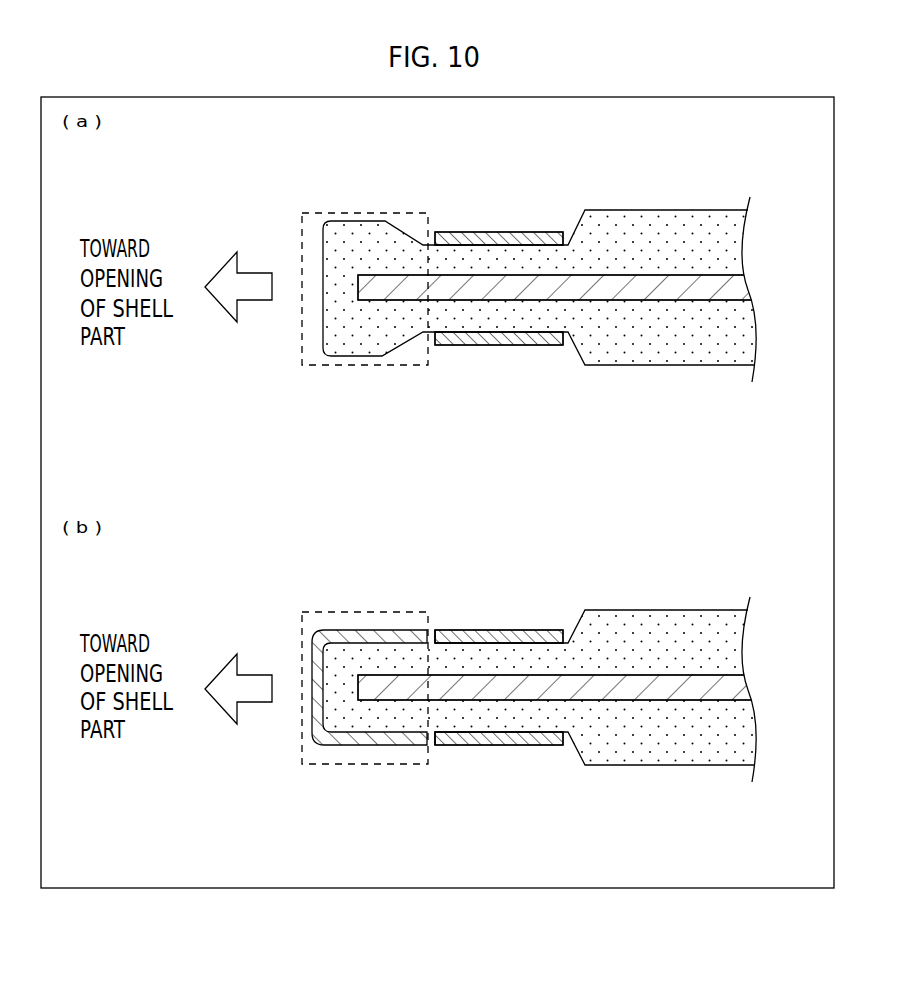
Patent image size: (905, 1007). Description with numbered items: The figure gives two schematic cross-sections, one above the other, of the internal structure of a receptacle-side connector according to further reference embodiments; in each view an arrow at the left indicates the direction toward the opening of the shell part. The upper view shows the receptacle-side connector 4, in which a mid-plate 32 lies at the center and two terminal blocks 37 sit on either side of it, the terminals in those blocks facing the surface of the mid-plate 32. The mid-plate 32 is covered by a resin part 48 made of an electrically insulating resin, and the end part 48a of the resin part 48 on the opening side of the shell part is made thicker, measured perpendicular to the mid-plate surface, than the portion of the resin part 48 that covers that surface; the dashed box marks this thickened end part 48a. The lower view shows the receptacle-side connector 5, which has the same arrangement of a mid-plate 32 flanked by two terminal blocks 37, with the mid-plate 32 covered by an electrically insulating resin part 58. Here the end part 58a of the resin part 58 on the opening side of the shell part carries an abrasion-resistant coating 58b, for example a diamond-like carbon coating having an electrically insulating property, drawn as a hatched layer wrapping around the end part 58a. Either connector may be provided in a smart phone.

The receptacle-side connector 4 is at (773, 191).
The receptacle-side connector 5 is at (773, 594).
The mid-plate 32 is at (672, 291).
The terminal blocks 37 is at (545, 330).
The resin part 48 is at (683, 226).
The end part 48a is at (377, 370).
The resin part 58 is at (683, 628).
The end part 58a is at (378, 767).
The abrasion-resistant coating 58b is at (372, 630).